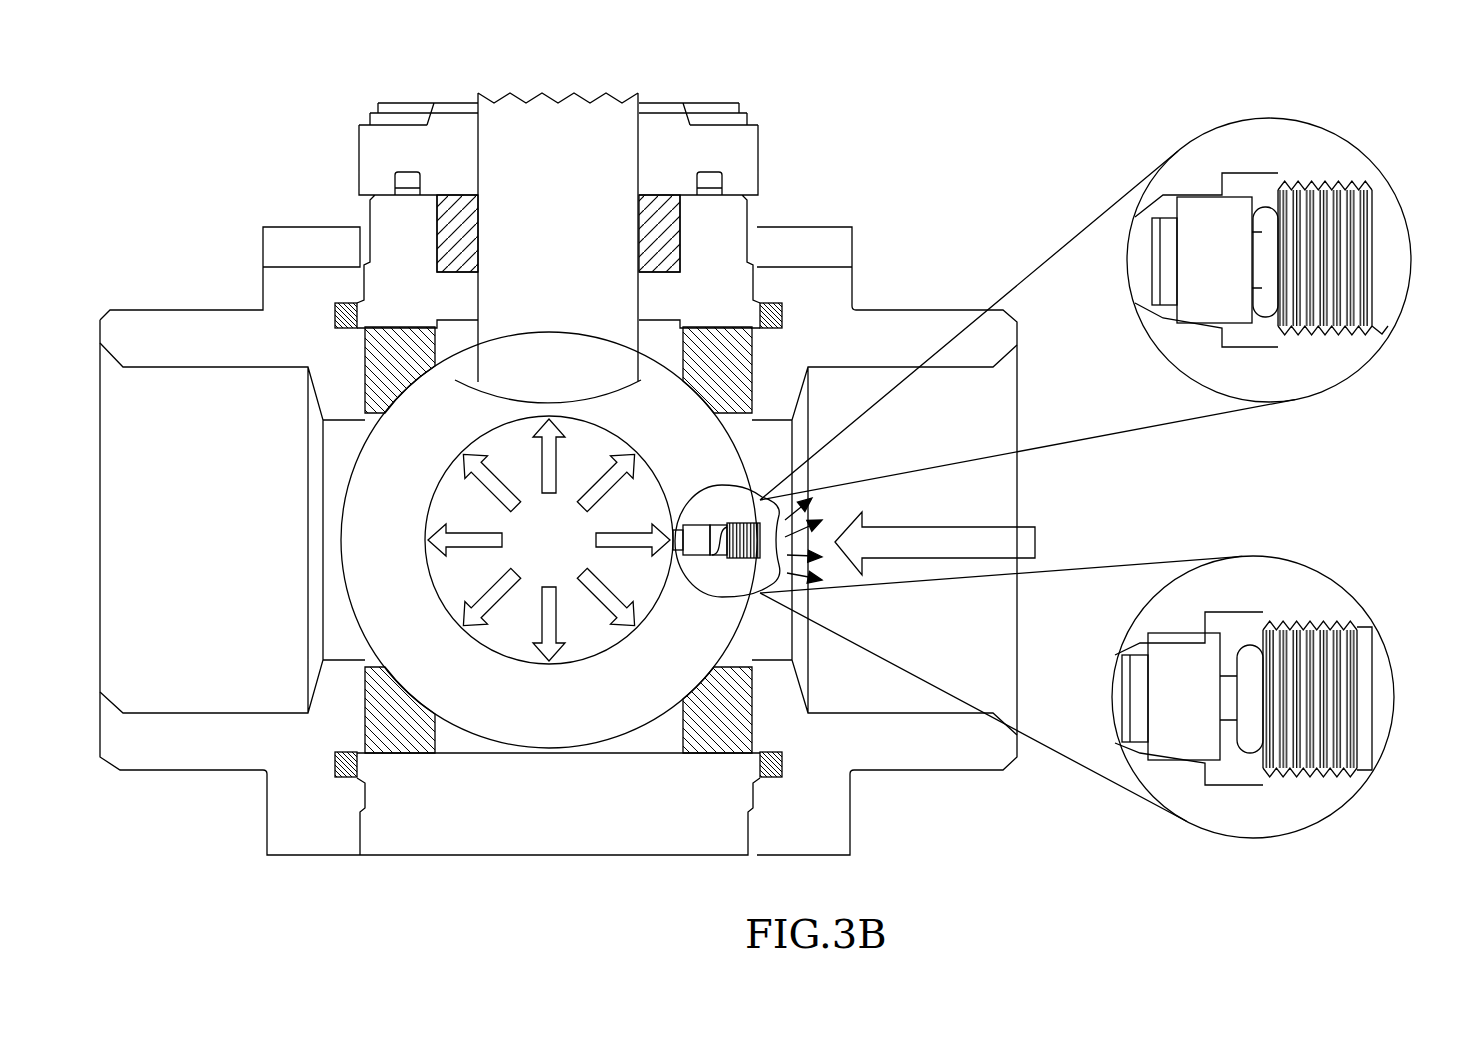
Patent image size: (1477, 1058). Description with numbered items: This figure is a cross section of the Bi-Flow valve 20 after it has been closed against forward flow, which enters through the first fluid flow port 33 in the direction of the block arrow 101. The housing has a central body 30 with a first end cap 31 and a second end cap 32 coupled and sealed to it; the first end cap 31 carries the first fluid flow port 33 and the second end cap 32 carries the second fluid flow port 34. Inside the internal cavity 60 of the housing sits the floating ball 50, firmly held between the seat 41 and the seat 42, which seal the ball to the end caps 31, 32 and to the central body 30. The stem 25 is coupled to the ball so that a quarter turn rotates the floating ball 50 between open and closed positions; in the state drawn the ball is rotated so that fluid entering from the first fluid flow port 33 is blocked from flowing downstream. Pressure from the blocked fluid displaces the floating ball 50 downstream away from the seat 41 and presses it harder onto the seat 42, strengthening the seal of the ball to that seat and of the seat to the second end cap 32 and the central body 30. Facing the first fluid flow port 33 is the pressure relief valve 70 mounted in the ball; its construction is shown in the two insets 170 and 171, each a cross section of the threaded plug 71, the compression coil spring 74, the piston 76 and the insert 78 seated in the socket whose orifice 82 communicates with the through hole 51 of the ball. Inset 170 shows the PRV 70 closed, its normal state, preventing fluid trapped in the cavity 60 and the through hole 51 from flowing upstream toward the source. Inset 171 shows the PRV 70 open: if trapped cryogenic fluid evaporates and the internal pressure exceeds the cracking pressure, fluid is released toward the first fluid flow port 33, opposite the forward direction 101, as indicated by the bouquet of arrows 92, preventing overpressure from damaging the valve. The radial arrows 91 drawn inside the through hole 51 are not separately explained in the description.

The Bi-Flow valve 20 is at (235, 135).
The stem 25 is at (528, 273).
The central body 30 is at (380, 273).
The first end cap 31 is at (840, 345).
The second end cap 32 is at (230, 345).
The first fluid flow port 33 is at (980, 690).
The second fluid flow port 34 is at (235, 460).
The seat 41 is at (701, 372).
The seat 42 is at (381, 372).
The floating ball 50 is at (536, 705).
The through hole 51 is at (536, 555).
The internal cavity 60 is at (664, 330).
The pressure relief valve 70 is at (728, 572).
The threaded plug 71 is at (1360, 183).
The compression coil spring 74 is at (1292, 247).
The piston 76 is at (1230, 220).
The insert 78 is at (1168, 230).
The orifice 82 is at (1143, 253).
The pressure arrows 91 is at (483, 630).
The bouquet of arrows 92 is at (823, 523).
The forward direction 101 is at (980, 527).
The inset 170 is at (1353, 800).
The inset 171 is at (1368, 362).